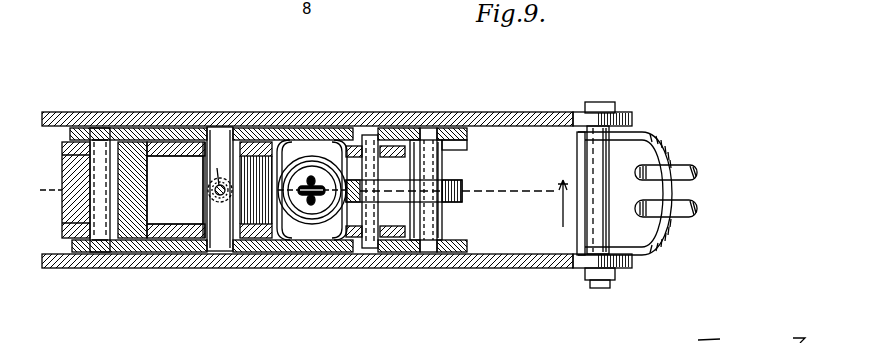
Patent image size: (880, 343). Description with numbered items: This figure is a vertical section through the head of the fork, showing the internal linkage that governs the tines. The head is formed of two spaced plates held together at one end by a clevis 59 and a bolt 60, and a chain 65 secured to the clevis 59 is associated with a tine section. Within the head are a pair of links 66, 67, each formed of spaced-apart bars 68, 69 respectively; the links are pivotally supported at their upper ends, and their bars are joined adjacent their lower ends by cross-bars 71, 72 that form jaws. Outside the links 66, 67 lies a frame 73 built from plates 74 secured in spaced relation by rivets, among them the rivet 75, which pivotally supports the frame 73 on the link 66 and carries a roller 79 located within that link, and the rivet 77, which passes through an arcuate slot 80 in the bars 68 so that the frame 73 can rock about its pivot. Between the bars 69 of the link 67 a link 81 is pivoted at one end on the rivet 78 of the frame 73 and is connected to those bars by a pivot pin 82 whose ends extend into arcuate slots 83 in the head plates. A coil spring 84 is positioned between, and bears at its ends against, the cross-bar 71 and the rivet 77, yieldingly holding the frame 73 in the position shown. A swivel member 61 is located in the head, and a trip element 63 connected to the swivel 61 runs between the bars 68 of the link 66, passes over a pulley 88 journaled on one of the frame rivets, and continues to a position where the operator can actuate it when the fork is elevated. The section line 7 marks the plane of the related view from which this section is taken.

The section line 7 is at (569, 203).
The clevis 59 is at (655, 145).
The bolt 60 is at (598, 290).
The swivel member 61 is at (320, 200).
The trip element 63 is at (308, 203).
The chain 65 is at (698, 210).
The link 66 is at (256, 190).
The link 67 is at (448, 148).
The bars 68 is at (162, 222).
The bars 69 is at (412, 166).
The cross-bar 71 is at (293, 138).
The cross-bar 72 is at (330, 138).
The frame 73 is at (132, 134).
The plates 74 is at (178, 135).
The rivet 75 is at (100, 132).
The rivet 77 is at (216, 140).
The rivet 78 is at (436, 136).
The roller 79 is at (62, 168).
The arcuate slot 80 is at (205, 190).
The link 81 is at (462, 193).
The pivot pin 82 is at (398, 144).
The arcuate slots 83 is at (368, 136).
The coil spring 84 is at (218, 202).
The pulley 88 is at (220, 172).